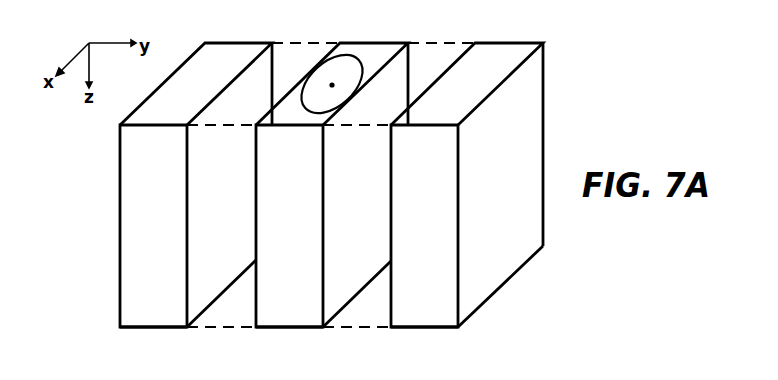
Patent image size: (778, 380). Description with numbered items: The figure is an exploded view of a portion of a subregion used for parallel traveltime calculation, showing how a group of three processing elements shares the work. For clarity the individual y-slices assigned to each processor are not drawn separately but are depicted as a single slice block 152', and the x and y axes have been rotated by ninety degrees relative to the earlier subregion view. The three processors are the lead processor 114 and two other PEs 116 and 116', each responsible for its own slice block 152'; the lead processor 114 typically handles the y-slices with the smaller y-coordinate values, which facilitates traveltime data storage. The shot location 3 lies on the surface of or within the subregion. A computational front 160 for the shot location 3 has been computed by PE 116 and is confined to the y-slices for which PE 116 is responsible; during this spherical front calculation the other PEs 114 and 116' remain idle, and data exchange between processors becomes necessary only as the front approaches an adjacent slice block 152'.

The lead processor 114 is at (172, 165).
The processing element 116 is at (332, 185).
The processing element 116' is at (467, 185).
The slice block 152' is at (289, 340).
The shot location 3 is at (332, 85).
The computational front 160 is at (362, 78).